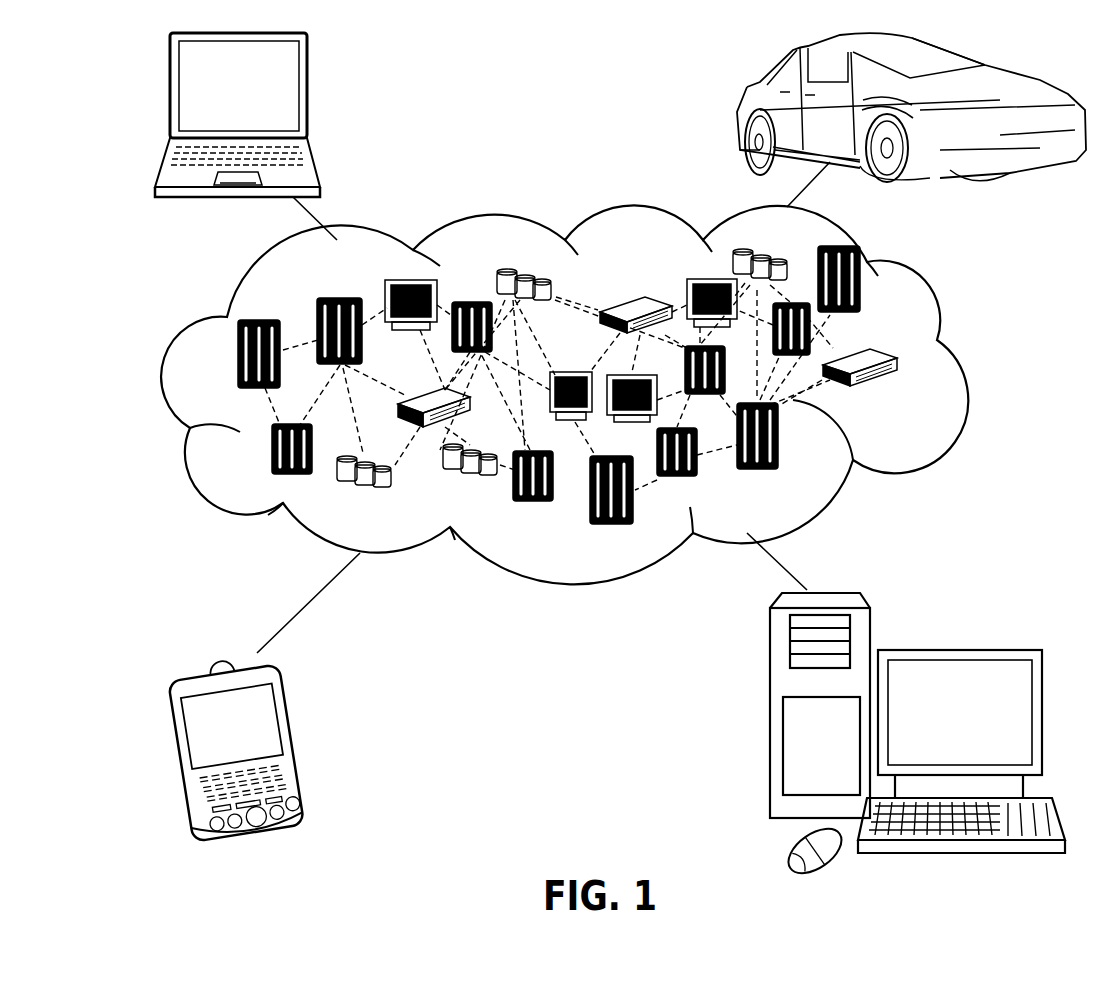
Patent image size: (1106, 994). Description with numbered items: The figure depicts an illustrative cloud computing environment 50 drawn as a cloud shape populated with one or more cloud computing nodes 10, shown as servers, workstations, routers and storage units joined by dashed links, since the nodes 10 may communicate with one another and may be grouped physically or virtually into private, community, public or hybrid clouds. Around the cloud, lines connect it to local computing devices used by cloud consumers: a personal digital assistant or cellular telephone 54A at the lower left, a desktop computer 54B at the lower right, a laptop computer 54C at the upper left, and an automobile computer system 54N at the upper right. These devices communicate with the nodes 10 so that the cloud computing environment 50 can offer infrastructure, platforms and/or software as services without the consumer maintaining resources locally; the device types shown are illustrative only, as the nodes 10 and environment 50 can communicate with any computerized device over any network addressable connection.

The cloud computing nodes 10 is at (905, 393).
The cloud computing environment 50 is at (960, 363).
The personal digital assistant (PDA) or cellular telephone 54A is at (297, 740).
The desktop computer 54B is at (957, 647).
The laptop computer 54C is at (307, 95).
The automobile computer system 54N is at (738, 108).